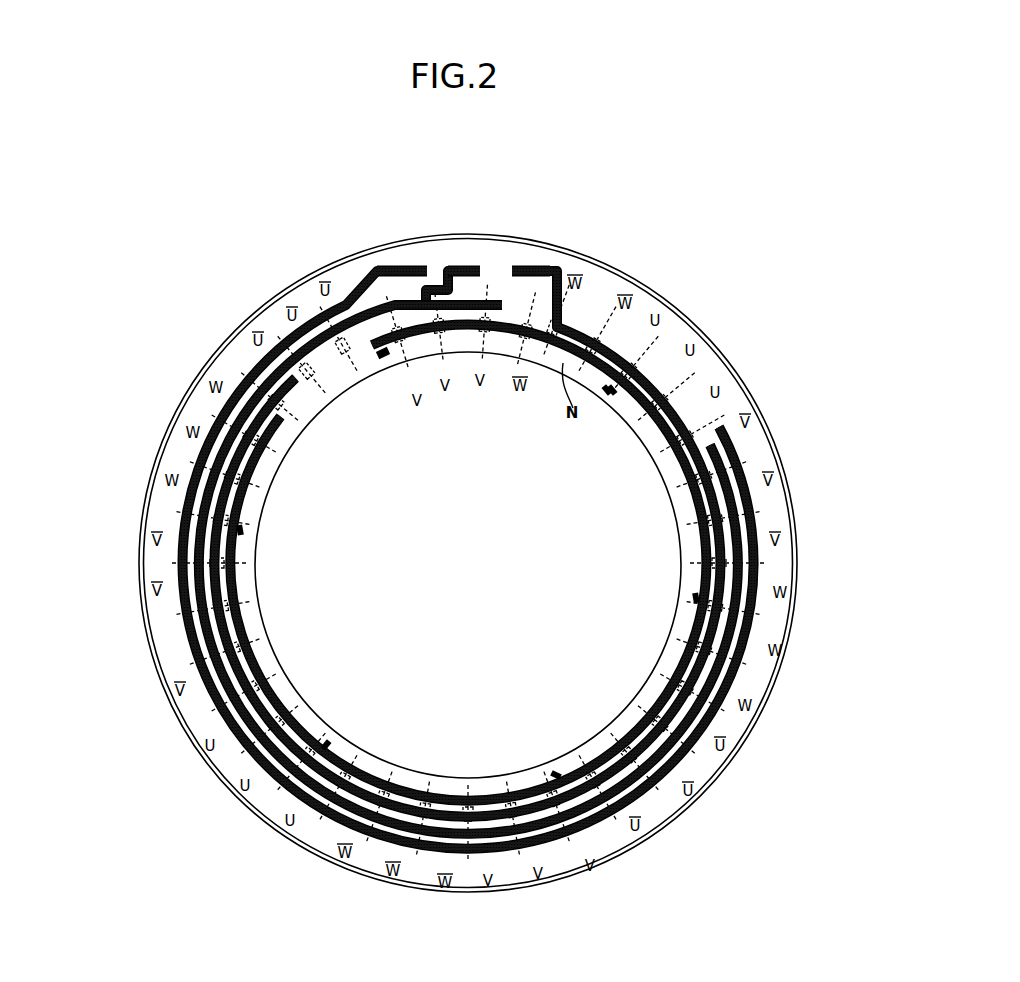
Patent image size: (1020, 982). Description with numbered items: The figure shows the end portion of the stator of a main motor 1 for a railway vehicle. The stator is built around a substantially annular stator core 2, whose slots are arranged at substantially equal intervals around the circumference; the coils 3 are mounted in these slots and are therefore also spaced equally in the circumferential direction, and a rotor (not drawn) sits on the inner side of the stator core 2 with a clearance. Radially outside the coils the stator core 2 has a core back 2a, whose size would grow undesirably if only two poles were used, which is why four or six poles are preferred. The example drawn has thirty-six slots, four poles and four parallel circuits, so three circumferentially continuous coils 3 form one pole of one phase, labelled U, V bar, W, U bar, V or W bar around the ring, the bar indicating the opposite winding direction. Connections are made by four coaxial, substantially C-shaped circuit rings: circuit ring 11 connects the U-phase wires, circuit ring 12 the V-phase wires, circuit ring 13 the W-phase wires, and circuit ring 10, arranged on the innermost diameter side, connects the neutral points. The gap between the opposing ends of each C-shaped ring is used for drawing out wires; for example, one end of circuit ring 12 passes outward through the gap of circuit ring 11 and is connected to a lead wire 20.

The main motor 1 is at (103, 751).
The stator core 2 is at (784, 627).
The core back 2a is at (778, 514).
The coils 3 is at (650, 357).
The circuit ring (fourth circuit ring) 10 is at (398, 785).
The circuit ring (first circuit ring) 11 is at (192, 652).
The circuit ring (second circuit ring) 12 is at (207, 700).
The circuit ring (third circuit ring) 13 is at (265, 770).
The lead wire 20 is at (523, 265).